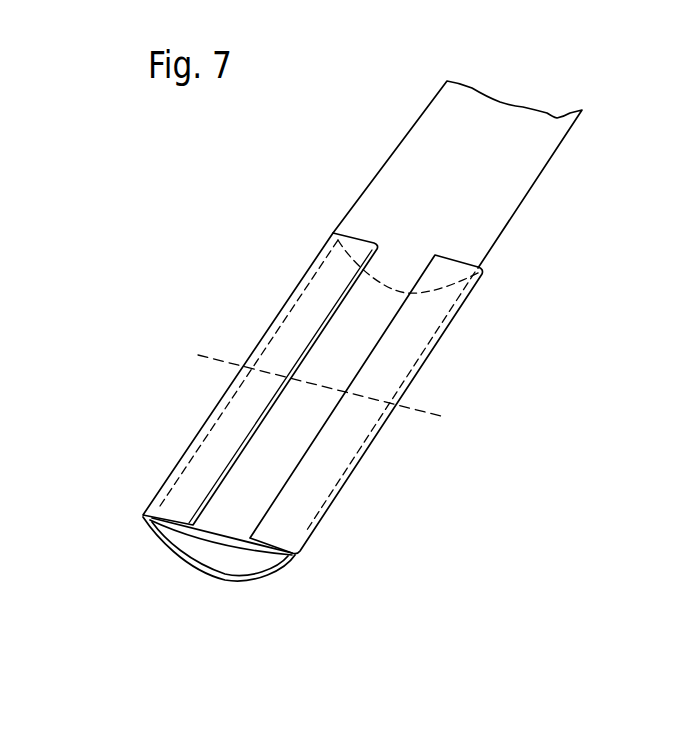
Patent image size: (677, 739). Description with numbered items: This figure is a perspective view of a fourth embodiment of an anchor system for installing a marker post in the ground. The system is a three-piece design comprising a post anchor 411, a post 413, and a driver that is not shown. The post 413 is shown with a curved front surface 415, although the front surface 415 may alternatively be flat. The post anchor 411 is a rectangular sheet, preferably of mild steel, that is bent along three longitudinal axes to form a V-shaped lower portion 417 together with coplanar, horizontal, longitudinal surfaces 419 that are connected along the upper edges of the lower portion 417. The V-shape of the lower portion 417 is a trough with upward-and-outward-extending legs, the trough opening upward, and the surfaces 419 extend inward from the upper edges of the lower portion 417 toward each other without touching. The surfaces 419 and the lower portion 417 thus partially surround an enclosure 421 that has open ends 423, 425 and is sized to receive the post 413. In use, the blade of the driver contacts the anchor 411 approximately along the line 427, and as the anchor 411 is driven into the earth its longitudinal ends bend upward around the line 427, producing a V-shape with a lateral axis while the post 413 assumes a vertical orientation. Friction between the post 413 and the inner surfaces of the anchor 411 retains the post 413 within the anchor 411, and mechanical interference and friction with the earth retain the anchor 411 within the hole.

The post anchor 411 is at (210, 405).
The post 413 is at (522, 173).
The front surface 415 is at (193, 556).
The V-shaped lower portion 417 is at (258, 572).
The longitudinal surfaces 419 is at (343, 475).
The enclosure 421 is at (228, 569).
The open end 423 is at (283, 567).
The open end 425 is at (356, 250).
The line 427 is at (430, 410).